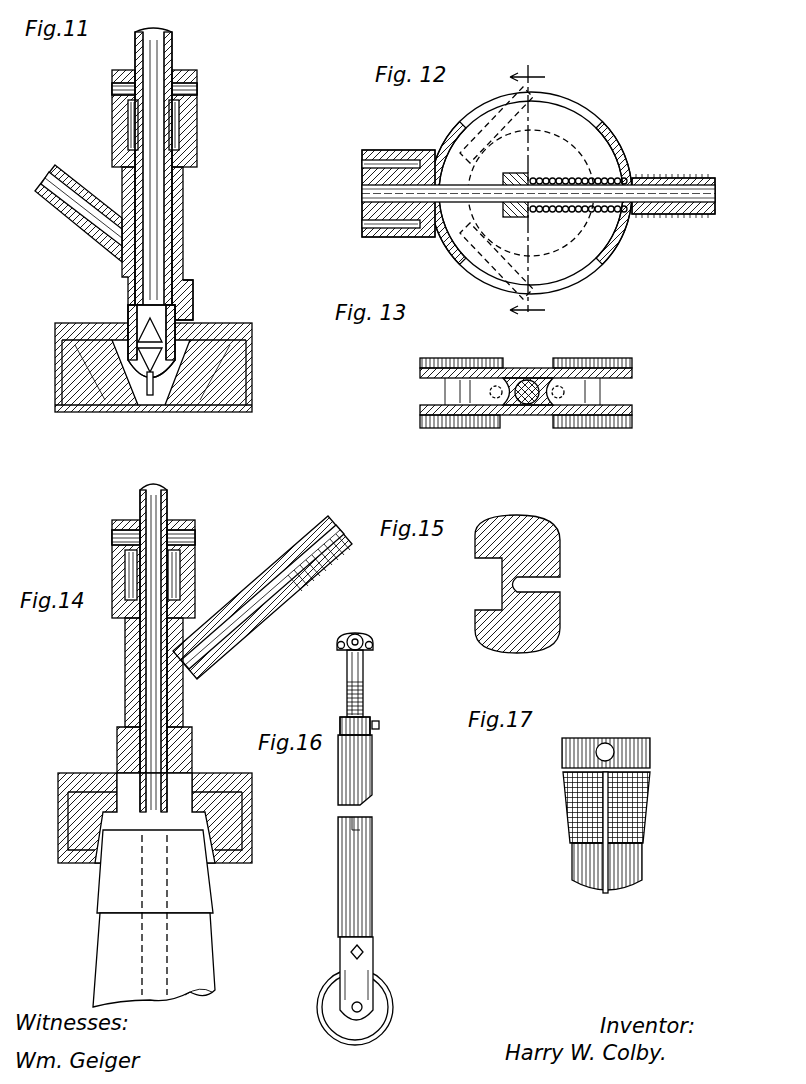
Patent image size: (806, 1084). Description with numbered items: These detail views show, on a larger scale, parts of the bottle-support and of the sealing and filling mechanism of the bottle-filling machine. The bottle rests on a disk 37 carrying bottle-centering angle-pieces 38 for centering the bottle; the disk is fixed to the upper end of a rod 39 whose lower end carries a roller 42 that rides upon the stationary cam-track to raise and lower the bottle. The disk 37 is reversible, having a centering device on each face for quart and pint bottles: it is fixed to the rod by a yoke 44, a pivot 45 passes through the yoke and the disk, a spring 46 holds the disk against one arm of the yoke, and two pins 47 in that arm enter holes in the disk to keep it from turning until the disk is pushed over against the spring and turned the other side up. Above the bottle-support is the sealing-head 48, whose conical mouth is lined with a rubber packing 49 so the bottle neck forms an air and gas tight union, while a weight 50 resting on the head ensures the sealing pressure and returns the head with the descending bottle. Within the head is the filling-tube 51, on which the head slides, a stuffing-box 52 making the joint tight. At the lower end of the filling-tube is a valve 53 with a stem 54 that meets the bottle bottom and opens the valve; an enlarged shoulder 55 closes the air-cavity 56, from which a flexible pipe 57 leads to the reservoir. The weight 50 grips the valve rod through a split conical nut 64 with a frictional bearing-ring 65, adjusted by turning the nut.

In FIG. 12, the disk 37 is at (612, 135).
In FIG. 13, the disk 37 is at (632, 410).
In FIG. 12, the bottle-centering angle-pieces 38 is at (472, 108).
In FIG. 13, the bottle-centering angle-pieces 38 is at (463, 370).
In FIG. 16, the rod 39 is at (372, 822).
In FIG. 16, the roller 42 is at (390, 1012).
In FIG. 12, the yoke 44 is at (405, 150).
In FIG. 16, the yoke 44 is at (365, 692).
In FIG. 12, the pivot 45 is at (362, 193).
In FIG. 13, the pivot 45 is at (527, 404).
In FIG. 16, the pivot 45 is at (362, 638).
In FIG. 12, the spring 46 is at (652, 178).
In FIG. 12, the pins 47 is at (362, 162).
In FIG. 13, the pins 47 is at (541, 366).
In FIG. 16, the pins 47 is at (342, 649).
In FIG. 11, the sealing-head 48 is at (252, 372).
In FIG. 14, the sealing-head 48 is at (58, 790).
In FIG. 11, the rubber packing 49 is at (92, 398).
In FIG. 14, the rubber packing 49 is at (225, 818).
In FIG. 15, the weight 50 is at (548, 618).
In FIG. 11, the filling-tube 51 is at (160, 238).
In FIG. 14, the filling-tube 51 is at (167, 510).
In FIG. 11, the stuffing-box 52 is at (197, 140).
In FIG. 14, the stuffing-box 52 is at (195, 567).
In FIG. 11, the valve 53 is at (175, 322).
In FIG. 11, the stem 54 is at (153, 388).
In FIG. 11, the shoulder 55 is at (193, 284).
In FIG. 14, the shoulder 55 is at (117, 732).
In FIG. 11, the air-cavity 56 is at (183, 262).
In FIG. 14, the air-cavity 56 is at (125, 718).
In FIG. 11, the flexible pipe 57 is at (78, 213).
In FIG. 14, the flexible pipe 57 is at (268, 640).
In FIG. 17, the split conical nut 64 is at (652, 746).
In FIG. 17, the frictional bearing-ring 65 is at (606, 893).